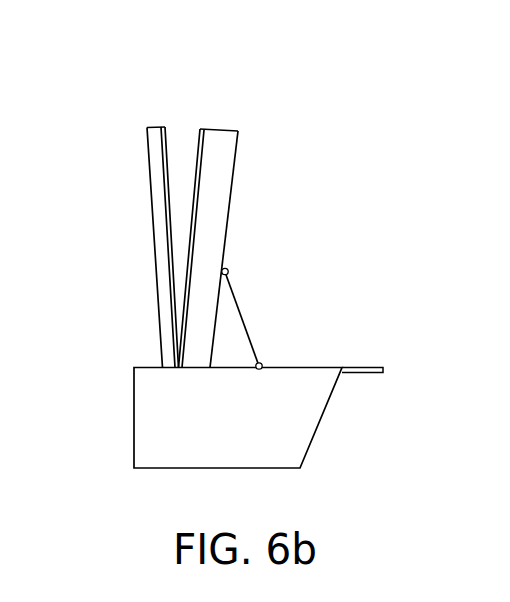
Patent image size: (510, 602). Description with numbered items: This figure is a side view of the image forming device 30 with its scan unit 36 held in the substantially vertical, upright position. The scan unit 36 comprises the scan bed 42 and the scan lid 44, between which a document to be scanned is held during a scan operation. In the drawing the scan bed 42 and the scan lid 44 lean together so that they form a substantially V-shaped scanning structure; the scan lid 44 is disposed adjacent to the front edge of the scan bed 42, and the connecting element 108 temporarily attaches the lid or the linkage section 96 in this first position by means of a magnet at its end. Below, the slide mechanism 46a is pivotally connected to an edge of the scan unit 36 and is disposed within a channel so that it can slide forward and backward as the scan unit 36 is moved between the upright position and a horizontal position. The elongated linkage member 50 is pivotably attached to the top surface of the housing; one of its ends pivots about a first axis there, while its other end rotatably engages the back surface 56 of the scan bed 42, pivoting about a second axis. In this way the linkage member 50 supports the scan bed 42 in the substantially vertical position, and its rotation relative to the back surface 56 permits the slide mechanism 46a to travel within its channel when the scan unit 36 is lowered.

The image forming device 30 is at (275, 40).
The scan unit 36 is at (101, 74).
The scan bed 42 is at (237, 131).
The scan lid 44 is at (150, 170).
The slide mechanism 46a is at (383, 373).
The linkage member 50 is at (243, 317).
The back surface 56 is at (233, 178).
The section of mechanical linkage 96 is at (190, 238).
The connecting element 108 is at (168, 147).